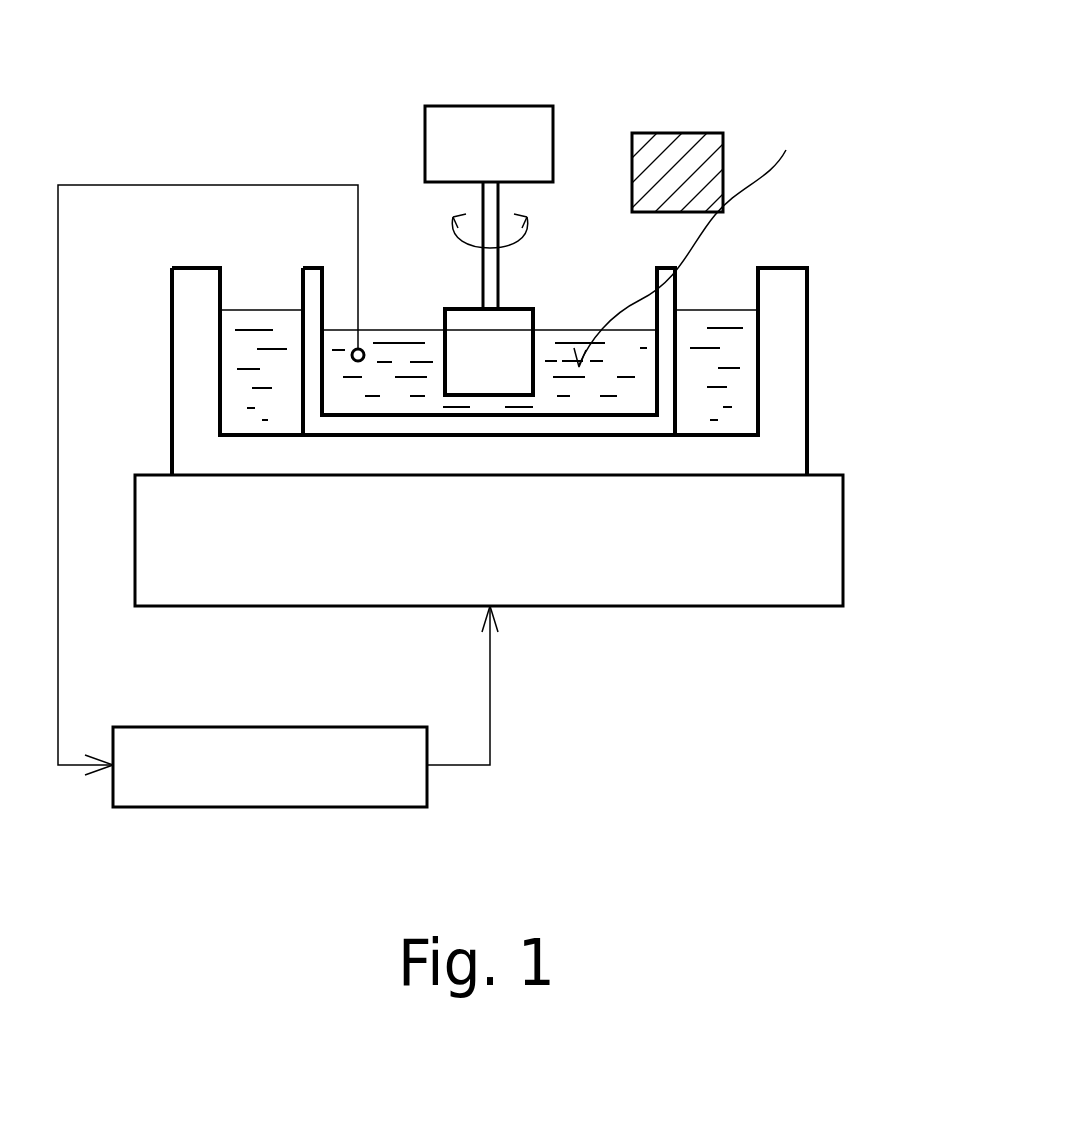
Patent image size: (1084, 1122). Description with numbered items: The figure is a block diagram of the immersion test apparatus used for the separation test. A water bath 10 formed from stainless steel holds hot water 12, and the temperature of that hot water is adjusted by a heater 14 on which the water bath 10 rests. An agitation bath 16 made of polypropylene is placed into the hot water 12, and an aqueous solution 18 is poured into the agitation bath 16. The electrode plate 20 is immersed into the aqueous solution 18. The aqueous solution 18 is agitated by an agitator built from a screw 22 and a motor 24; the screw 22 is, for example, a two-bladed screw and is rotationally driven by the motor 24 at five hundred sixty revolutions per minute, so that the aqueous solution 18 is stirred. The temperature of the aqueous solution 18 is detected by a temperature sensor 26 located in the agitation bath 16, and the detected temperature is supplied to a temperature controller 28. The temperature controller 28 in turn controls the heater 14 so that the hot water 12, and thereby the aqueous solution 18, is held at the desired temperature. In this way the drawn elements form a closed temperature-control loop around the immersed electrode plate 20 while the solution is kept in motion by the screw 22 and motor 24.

The water bath 10 is at (808, 357).
The hot water 12 is at (727, 308).
The heater 14 is at (845, 540).
The agitation bath 16 is at (677, 275).
The aqueous solution 18 is at (409, 330).
The electrode plate 20 is at (690, 133).
The screw 22 is at (522, 309).
The motor 24 is at (500, 106).
The temperature sensor 26 is at (354, 349).
The temperature controller 28 is at (312, 727).